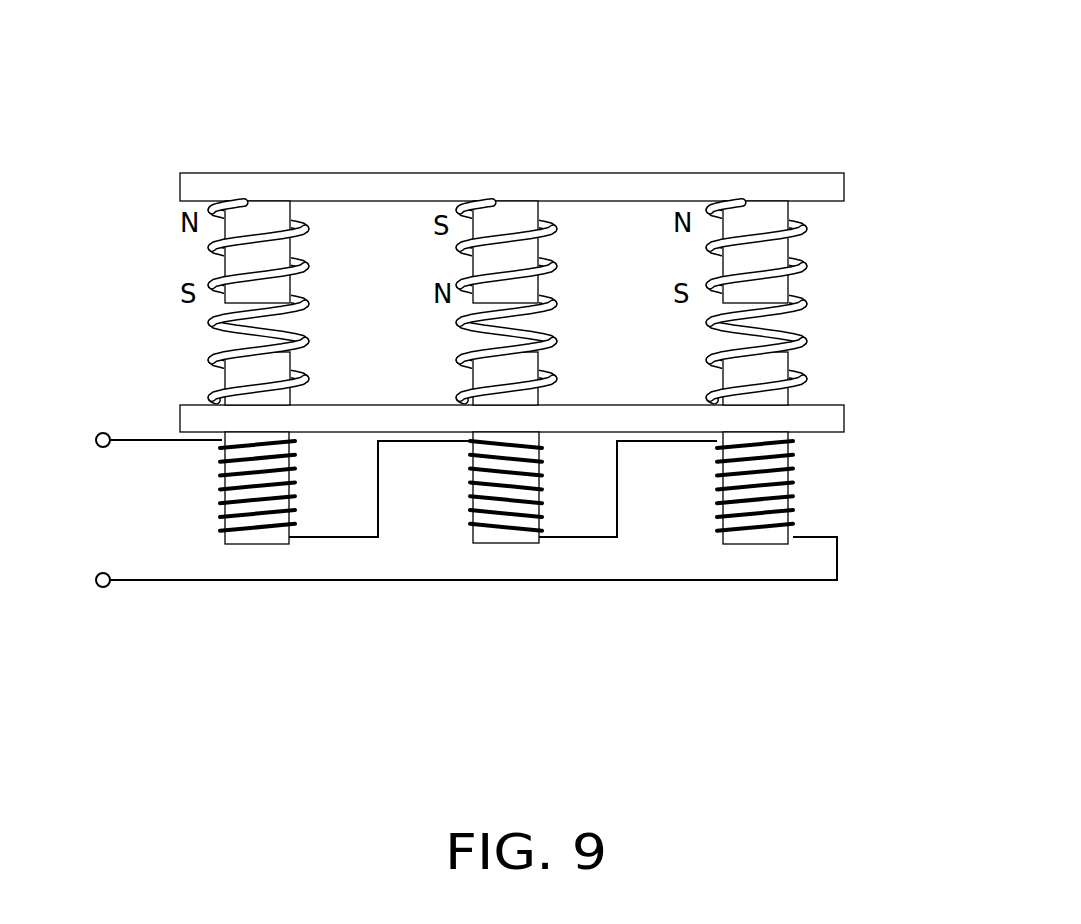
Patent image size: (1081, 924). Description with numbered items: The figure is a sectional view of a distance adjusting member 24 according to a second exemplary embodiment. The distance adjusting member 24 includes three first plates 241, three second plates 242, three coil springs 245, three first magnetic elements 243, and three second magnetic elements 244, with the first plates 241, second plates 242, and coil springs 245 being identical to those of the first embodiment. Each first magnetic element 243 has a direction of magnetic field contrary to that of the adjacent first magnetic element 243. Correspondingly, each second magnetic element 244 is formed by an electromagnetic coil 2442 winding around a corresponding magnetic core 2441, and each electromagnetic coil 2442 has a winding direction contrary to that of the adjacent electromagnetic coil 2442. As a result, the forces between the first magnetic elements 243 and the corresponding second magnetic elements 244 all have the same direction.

The distance adjusting member 24 is at (574, 69).
The first plate 241 is at (231, 186).
The second plate 242 is at (193, 422).
The first magnetic element 243 is at (772, 258).
The second magnetic element 244 is at (583, 469).
The magnetic core 2441 is at (765, 367).
The electromagnetic coil 2442 is at (793, 468).
The coil spring 245 is at (793, 307).